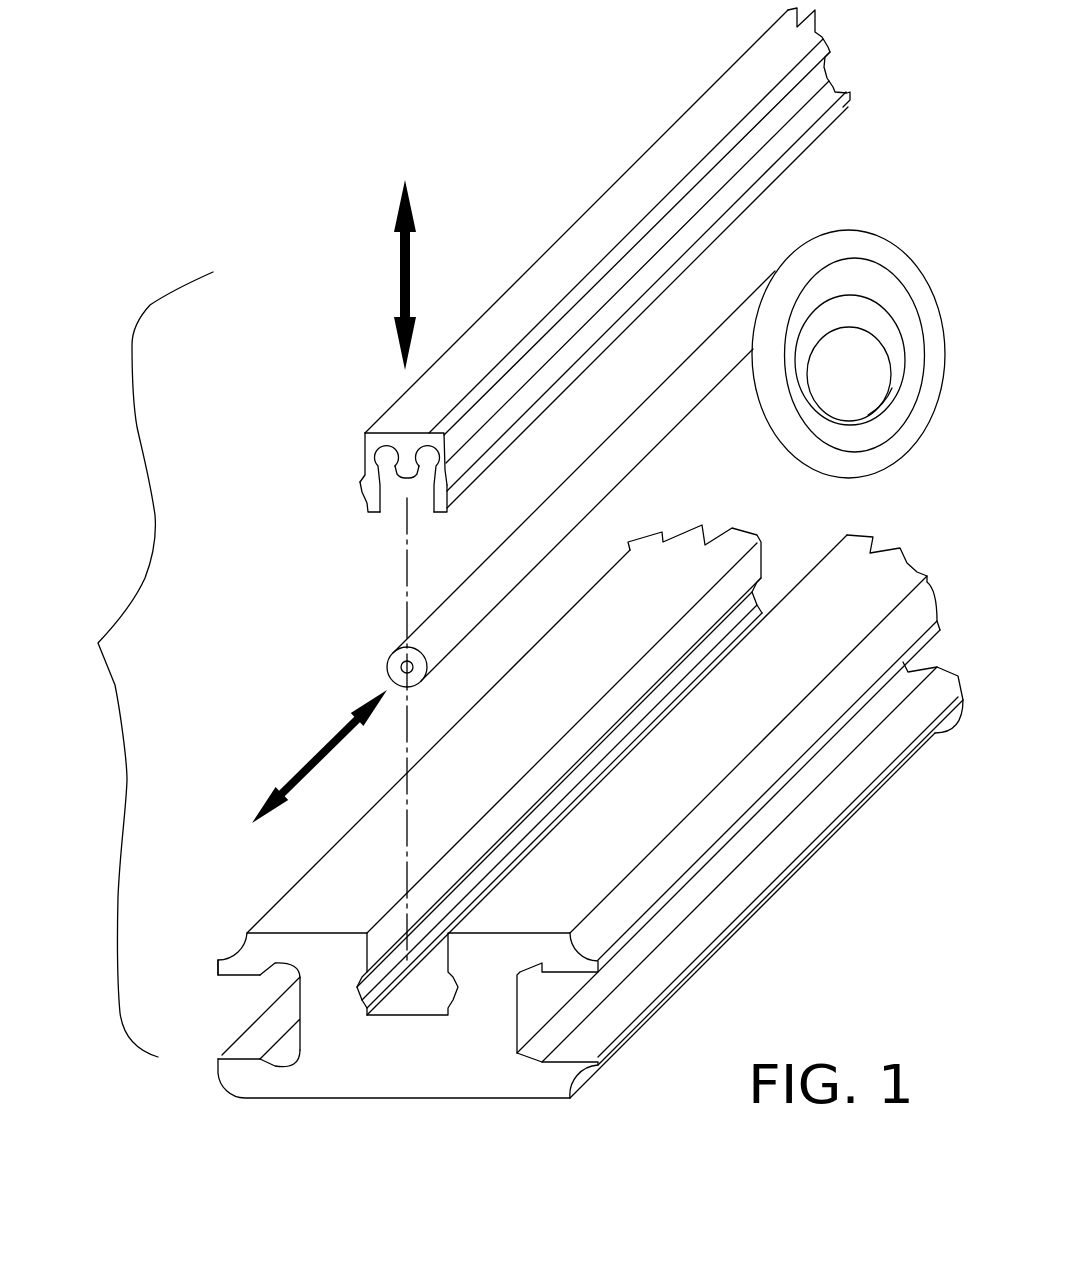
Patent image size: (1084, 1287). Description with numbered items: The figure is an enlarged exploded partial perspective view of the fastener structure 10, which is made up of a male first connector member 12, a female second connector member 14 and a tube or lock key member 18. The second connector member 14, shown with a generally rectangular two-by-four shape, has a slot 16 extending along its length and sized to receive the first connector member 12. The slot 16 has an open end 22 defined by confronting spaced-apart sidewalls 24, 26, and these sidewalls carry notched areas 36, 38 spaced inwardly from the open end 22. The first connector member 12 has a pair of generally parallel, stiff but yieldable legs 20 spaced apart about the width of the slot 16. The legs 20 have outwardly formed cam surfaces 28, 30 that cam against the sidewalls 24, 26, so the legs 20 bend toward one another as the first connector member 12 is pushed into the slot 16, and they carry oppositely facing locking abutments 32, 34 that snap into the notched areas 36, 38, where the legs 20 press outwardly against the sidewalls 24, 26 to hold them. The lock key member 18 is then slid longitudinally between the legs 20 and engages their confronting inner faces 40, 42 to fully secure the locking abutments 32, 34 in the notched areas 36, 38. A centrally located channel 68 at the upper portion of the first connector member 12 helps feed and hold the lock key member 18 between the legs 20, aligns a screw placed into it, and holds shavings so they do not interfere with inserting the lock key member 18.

The fastener structure 10 is at (139, 664).
The first connector member 12 is at (536, 343).
The second connector member 14 is at (547, 830).
The slot 16 is at (287, 990).
The lock key member 18 is at (547, 530).
The yieldable legs 20 is at (398, 524).
The open end 22 is at (238, 1013).
The sidewall 24 is at (243, 975).
The sidewall 26 is at (248, 1043).
The cam surface 28 is at (360, 498).
The cam surface 30 is at (449, 511).
The locking abutment 32 is at (358, 487).
The locking abutment 34 is at (469, 459).
The notched area 36 is at (275, 962).
The notched area 38 is at (273, 1063).
The inner face 40 is at (390, 507).
The inner face 42 is at (427, 505).
The centrally located channel 68 is at (405, 467).